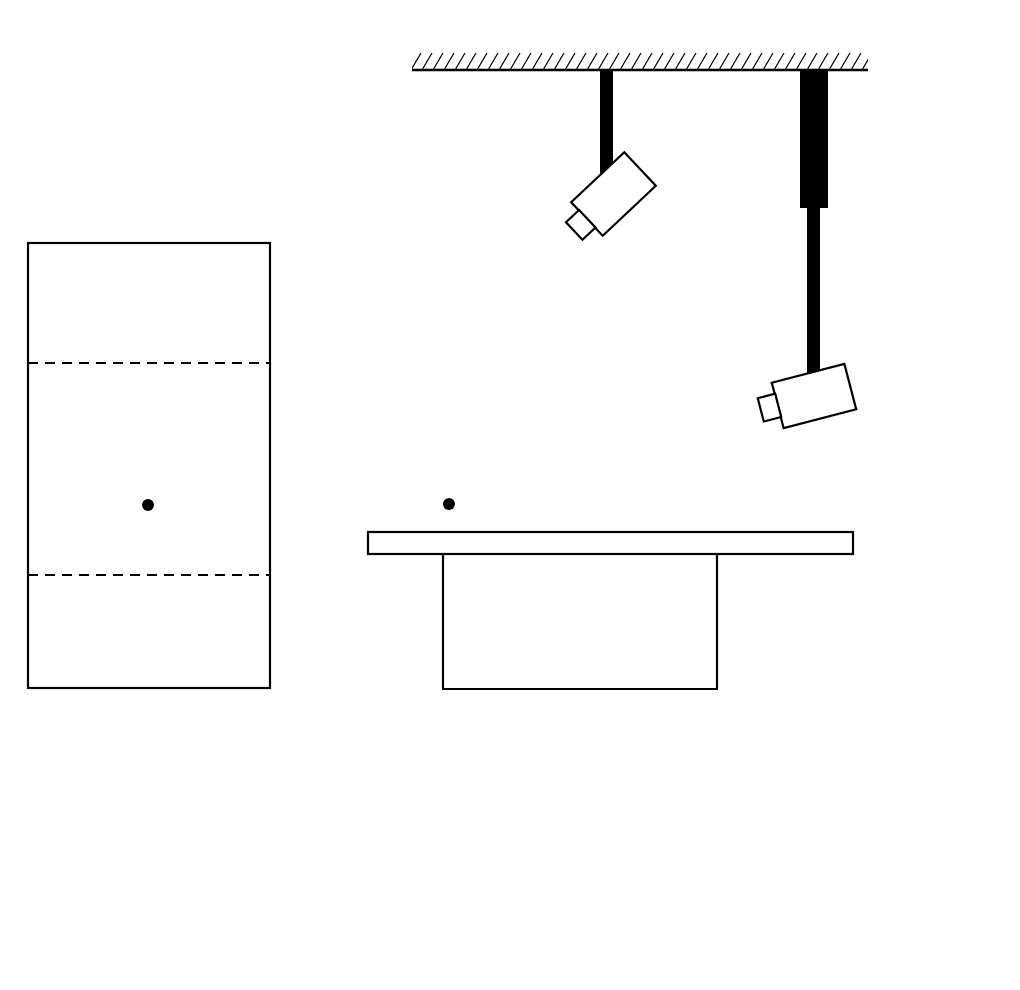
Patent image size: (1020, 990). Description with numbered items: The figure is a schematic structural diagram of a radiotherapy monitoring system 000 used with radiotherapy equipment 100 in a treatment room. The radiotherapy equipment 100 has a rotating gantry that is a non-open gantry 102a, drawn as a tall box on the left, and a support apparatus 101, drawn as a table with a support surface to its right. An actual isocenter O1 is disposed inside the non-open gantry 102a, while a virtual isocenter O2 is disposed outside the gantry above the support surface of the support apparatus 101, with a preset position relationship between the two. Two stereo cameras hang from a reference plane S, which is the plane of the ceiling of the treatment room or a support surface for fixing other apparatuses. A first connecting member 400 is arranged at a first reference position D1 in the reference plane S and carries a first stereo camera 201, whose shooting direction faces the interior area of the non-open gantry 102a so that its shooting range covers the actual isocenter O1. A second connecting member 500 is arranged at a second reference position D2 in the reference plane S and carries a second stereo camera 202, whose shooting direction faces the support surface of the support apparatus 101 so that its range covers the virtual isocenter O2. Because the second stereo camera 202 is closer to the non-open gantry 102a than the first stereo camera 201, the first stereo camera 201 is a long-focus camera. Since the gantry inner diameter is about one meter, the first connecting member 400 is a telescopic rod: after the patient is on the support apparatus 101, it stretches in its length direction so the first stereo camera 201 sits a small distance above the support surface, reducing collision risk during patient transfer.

The radiotherapy monitoring system 000 is at (78, 32).
The reference plane S is at (602, 85).
The first reference position D1 is at (811, 66).
The second reference position D2 is at (608, 66).
The second connecting member 500 is at (599, 117).
The first connecting member 400 is at (799, 145).
The second stereo camera 202 is at (604, 200).
The first stereo camera 201 is at (821, 398).
The radiotherapy equipment 100 is at (440, 524).
The non-open gantry 102a is at (149, 504).
The support apparatus 101 is at (610, 622).
The actual isocenter O1 is at (149, 485).
The virtual isocenter O2 is at (450, 492).